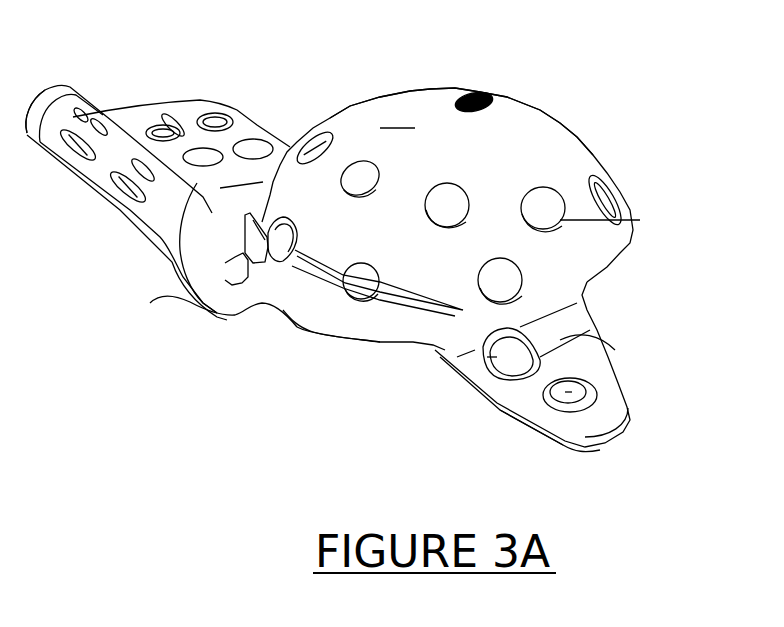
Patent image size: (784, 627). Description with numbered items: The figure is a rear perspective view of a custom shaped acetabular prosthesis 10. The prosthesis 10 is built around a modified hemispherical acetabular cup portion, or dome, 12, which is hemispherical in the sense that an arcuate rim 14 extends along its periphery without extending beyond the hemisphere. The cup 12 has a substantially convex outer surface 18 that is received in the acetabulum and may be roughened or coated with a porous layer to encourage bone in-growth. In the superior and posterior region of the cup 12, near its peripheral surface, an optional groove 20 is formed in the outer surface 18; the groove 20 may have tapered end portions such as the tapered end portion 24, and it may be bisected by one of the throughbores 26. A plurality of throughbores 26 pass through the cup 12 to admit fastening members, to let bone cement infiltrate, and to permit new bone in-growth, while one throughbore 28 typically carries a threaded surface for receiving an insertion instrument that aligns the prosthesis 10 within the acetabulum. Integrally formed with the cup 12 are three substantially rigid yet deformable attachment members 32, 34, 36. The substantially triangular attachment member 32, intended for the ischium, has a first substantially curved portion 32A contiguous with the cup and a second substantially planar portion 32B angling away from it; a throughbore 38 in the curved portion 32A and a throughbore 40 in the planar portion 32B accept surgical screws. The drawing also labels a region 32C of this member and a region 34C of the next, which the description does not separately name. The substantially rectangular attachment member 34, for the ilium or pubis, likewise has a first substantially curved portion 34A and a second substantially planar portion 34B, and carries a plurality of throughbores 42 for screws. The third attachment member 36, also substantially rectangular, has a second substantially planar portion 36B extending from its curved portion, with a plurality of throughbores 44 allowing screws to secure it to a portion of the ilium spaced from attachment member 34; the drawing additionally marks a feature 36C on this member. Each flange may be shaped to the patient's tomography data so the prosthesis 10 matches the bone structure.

The acetabular prosthesis 10 is at (622, 78).
The acetabular cup portion 12 is at (389, 80).
The rim 14 is at (367, 343).
The outer surface 18 is at (553, 147).
The groove 20 is at (314, 272).
The tapered end portion 24 is at (448, 302).
The throughbores 26 is at (430, 186).
The throughbore 28 is at (478, 93).
The attachment member 32 is at (640, 400).
The first substantially curved portion 32A is at (587, 315).
The second substantially planar portion 32B is at (520, 393).
The ramp 32C is at (585, 362).
The attachment member 34 is at (37, 160).
The first substantially curved portion 34A is at (173, 293).
The second substantially planar portion 34B is at (133, 235).
The end of first arm 34C is at (68, 88).
The attachment member 36 is at (216, 92).
The second substantially planar portion 36B is at (215, 229).
The pocket 36C is at (250, 132).
The throughbore 38 is at (470, 377).
The throughbore 40 is at (593, 407).
The throughbores 42 is at (135, 158).
The throughbores 44 is at (170, 128).